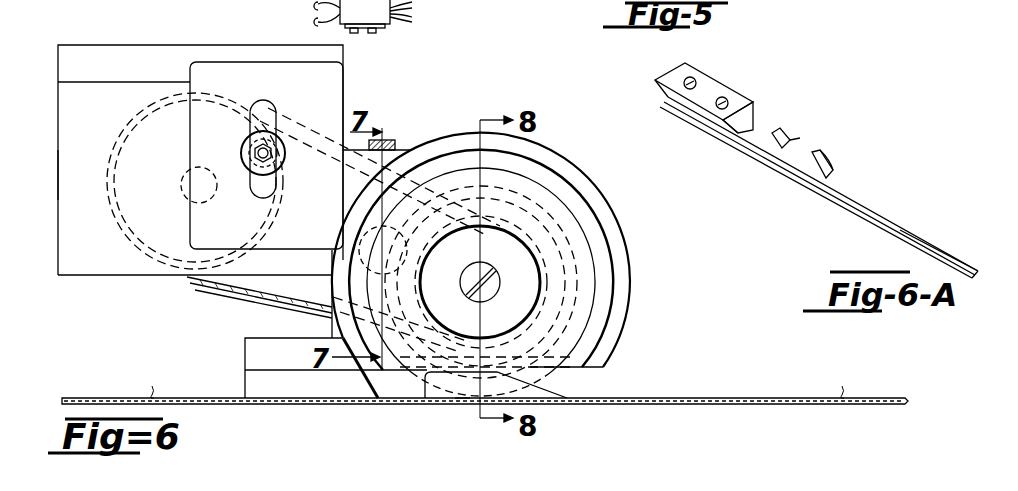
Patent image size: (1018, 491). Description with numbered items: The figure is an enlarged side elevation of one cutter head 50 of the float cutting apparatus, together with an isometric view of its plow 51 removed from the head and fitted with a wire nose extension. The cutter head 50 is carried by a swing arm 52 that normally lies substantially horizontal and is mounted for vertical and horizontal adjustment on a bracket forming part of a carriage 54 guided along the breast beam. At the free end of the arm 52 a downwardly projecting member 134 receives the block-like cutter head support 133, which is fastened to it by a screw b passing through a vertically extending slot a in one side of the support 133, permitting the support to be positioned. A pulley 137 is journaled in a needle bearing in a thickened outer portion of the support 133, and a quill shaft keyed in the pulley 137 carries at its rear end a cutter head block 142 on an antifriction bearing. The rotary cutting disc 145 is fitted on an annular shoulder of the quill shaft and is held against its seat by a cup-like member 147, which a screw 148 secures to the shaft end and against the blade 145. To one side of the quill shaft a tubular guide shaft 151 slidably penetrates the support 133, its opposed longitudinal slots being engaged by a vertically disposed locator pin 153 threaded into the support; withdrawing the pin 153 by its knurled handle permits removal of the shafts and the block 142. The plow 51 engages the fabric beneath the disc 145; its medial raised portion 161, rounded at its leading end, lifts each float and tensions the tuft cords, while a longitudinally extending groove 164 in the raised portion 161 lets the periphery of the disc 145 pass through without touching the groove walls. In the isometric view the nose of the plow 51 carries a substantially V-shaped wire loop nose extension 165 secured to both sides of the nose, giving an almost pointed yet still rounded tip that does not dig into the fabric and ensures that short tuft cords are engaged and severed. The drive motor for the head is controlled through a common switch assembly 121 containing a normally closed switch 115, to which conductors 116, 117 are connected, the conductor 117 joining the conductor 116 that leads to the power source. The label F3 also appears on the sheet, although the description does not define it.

In FIG. 6, the cutter head 50 is at (511, 265).
In FIG. 6, the plow 51 is at (624, 398).
In FIG. 6-A, the plow 51 is at (760, 143).
In FIG. 6, the swing arm 52 is at (152, 52).
In FIG. 6, the carriage 54 is at (70, 45).
In FIG. 6, the switch 115 is at (415, 5).
In FIG. 6, the conductor 116 is at (312, 13).
In FIG. 6, the conductor 117 is at (414, 16).
In FIG. 6, the switch assembly 121 is at (388, 28).
In FIG. 6, the cutter head support 133 is at (400, 150).
In FIG. 6, the downwardly projecting member 134 is at (58, 163).
In FIG. 6, the pulley 137 is at (556, 263).
In FIG. 6, the cutter head block 142 is at (604, 206).
In FIG. 6, the rotary cutting disc 145 is at (544, 372).
In FIG. 6, the cup-like member 147 is at (512, 319).
In FIG. 6, the screw 148 is at (492, 273).
In FIG. 6, the tubular guide shaft 151 is at (330, 256).
In FIG. 6, the locator pin 153 is at (388, 137).
In FIG. 6, the raised portion 161 is at (470, 400).
In FIG. 6-A, the raised portion 161 is at (783, 136).
In FIG. 6-A, the groove 164 is at (828, 166).
In FIG. 6-A, the wire loop nose extension 165 is at (899, 218).
In FIG. 6, the slot a is at (276, 107).
In FIG. 6, the screw b is at (247, 153).
In FIG. 6, the feed direction F3 is at (491, 390).